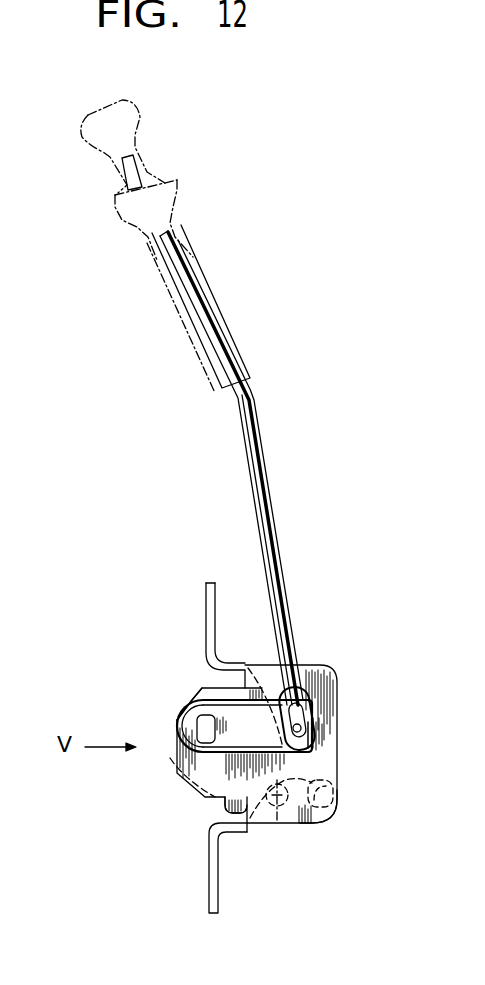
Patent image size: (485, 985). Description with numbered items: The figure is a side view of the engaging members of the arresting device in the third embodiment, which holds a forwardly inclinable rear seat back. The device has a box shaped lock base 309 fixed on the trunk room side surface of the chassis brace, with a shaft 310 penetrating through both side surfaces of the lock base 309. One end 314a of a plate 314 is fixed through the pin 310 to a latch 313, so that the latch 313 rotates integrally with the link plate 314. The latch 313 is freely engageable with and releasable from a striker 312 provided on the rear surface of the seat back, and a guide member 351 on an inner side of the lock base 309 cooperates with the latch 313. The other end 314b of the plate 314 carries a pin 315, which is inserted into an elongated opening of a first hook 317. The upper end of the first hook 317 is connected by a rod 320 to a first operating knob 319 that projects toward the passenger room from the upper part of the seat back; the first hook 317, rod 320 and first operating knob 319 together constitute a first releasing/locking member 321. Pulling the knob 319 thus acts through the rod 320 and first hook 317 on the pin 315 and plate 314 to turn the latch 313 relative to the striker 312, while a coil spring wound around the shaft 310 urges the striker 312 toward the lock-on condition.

The lock base 309 is at (308, 830).
The shaft 310 is at (198, 722).
The striker 312 is at (277, 824).
The latch 313 is at (223, 802).
The plate 314 is at (242, 713).
The end of plate 314a is at (192, 728).
The other end of plate 314b is at (314, 733).
The pin 315 is at (301, 728).
The first hook 317 is at (310, 690).
The first operating knob 319 is at (218, 310).
The rod 320 is at (257, 443).
The first releasing/locking member 321 is at (313, 641).
The guide member 351 is at (338, 800).